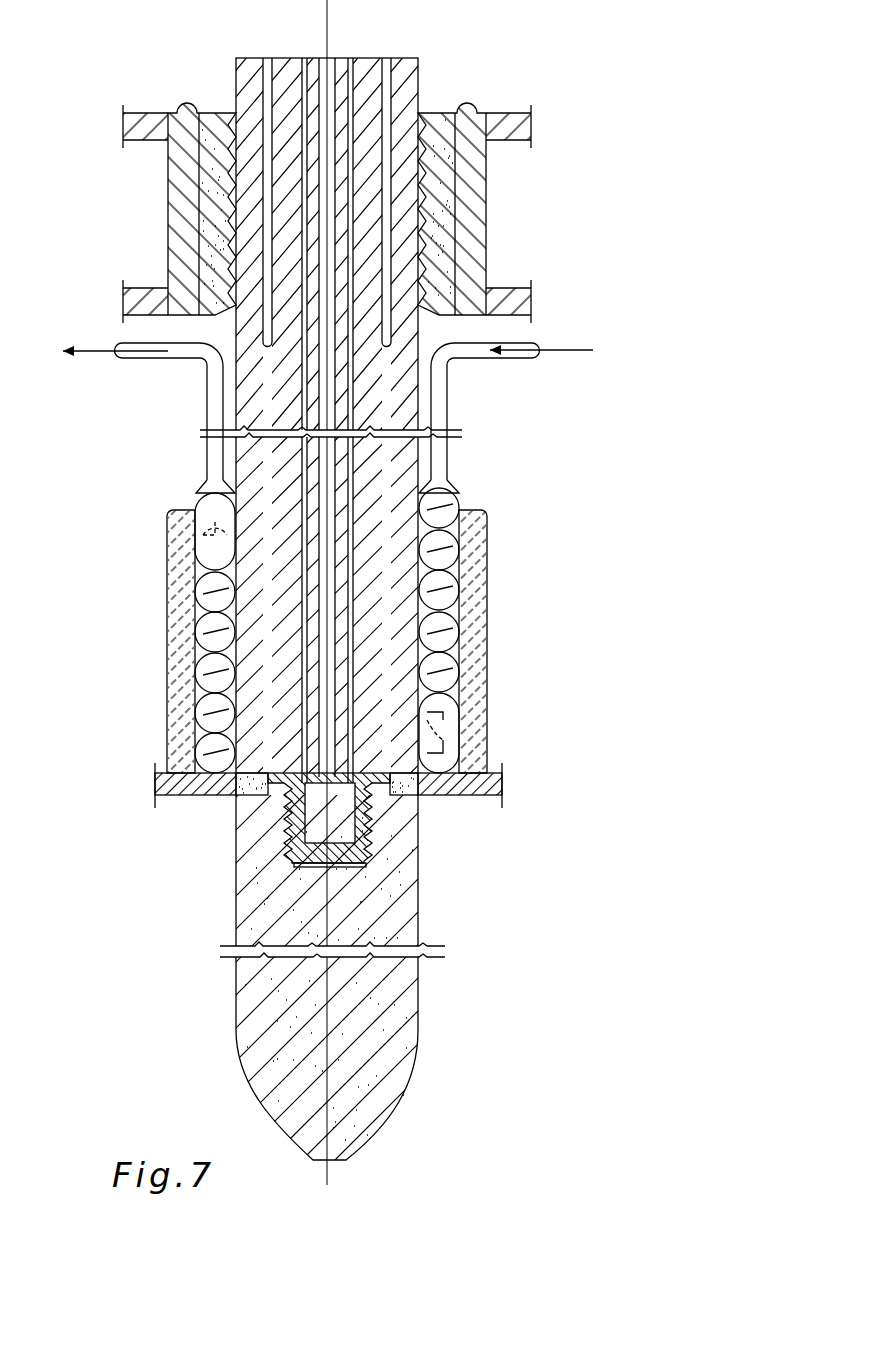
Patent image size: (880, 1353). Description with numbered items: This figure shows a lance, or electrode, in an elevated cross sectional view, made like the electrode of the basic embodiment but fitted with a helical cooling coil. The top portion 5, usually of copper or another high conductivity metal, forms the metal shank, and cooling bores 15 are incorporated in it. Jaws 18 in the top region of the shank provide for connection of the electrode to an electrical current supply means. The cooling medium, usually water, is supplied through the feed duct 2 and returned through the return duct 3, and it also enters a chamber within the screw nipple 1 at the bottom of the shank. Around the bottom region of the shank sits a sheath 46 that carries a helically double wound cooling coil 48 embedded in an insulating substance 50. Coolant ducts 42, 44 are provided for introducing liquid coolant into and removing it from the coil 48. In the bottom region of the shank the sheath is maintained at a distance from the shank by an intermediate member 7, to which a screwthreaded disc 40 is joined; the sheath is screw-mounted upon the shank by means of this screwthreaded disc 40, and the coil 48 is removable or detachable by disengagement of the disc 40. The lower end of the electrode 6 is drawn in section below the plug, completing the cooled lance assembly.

The screw nipple 1 is at (373, 827).
The feed duct 2 is at (347, 396).
The return duct 3 is at (330, 357).
The top portion 5 is at (409, 71).
The sheath tip 6 is at (412, 988).
The intermediate member 7 is at (250, 787).
The cooling bores 15 is at (265, 65).
The jaws 18 is at (210, 113).
The screwthreaded disc 40 is at (474, 790).
The coolant duct 42 is at (180, 358).
The coolant duct 44 is at (518, 357).
The sheath 46 is at (487, 632).
The cooling coil 48 is at (458, 545).
The insulating substance 50 is at (167, 632).